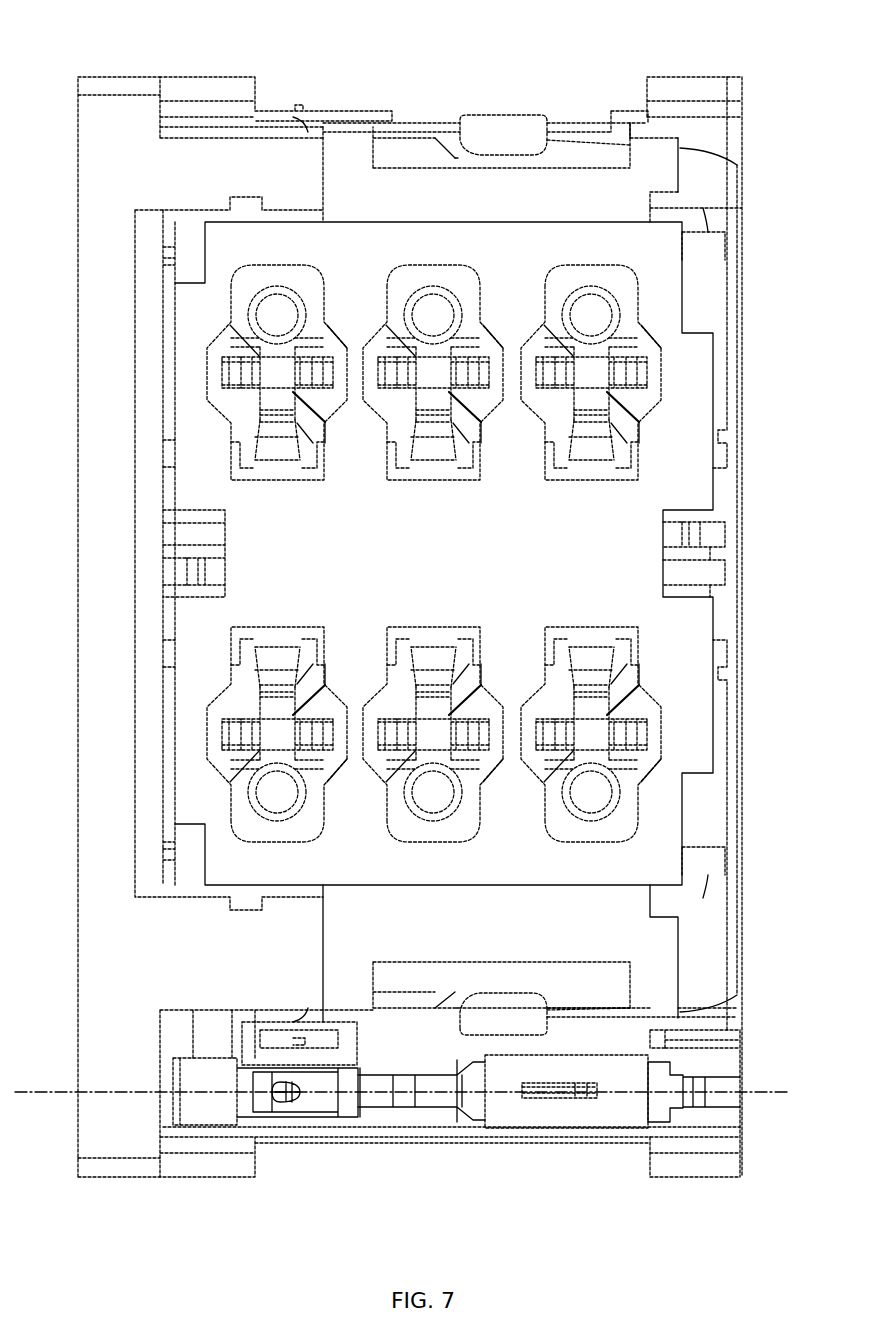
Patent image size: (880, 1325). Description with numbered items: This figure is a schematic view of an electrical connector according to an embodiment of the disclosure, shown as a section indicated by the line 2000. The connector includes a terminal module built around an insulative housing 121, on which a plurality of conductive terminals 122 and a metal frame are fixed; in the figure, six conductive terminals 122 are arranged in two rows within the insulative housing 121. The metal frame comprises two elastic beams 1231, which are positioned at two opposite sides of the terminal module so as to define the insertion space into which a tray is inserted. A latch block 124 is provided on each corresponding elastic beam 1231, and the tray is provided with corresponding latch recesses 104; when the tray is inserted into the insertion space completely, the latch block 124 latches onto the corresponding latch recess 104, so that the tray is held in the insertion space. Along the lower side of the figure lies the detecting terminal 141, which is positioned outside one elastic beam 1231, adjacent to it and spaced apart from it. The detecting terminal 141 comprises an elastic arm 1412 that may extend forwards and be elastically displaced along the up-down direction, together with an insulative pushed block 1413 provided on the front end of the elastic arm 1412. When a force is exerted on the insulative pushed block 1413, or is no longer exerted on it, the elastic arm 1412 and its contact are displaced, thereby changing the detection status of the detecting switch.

The latch recess 104 is at (452, 140).
The latch block 124 is at (508, 132).
The elastic beam 1231 is at (580, 130).
The conductive terminal 122 is at (600, 733).
The insulative housing 121 is at (698, 727).
The detecting terminal 141 is at (456, 1142).
The elastic arm 1412 is at (415, 1108).
The insulative pushed block 1413 is at (205, 1105).
The section line 2000 is at (777, 1100).